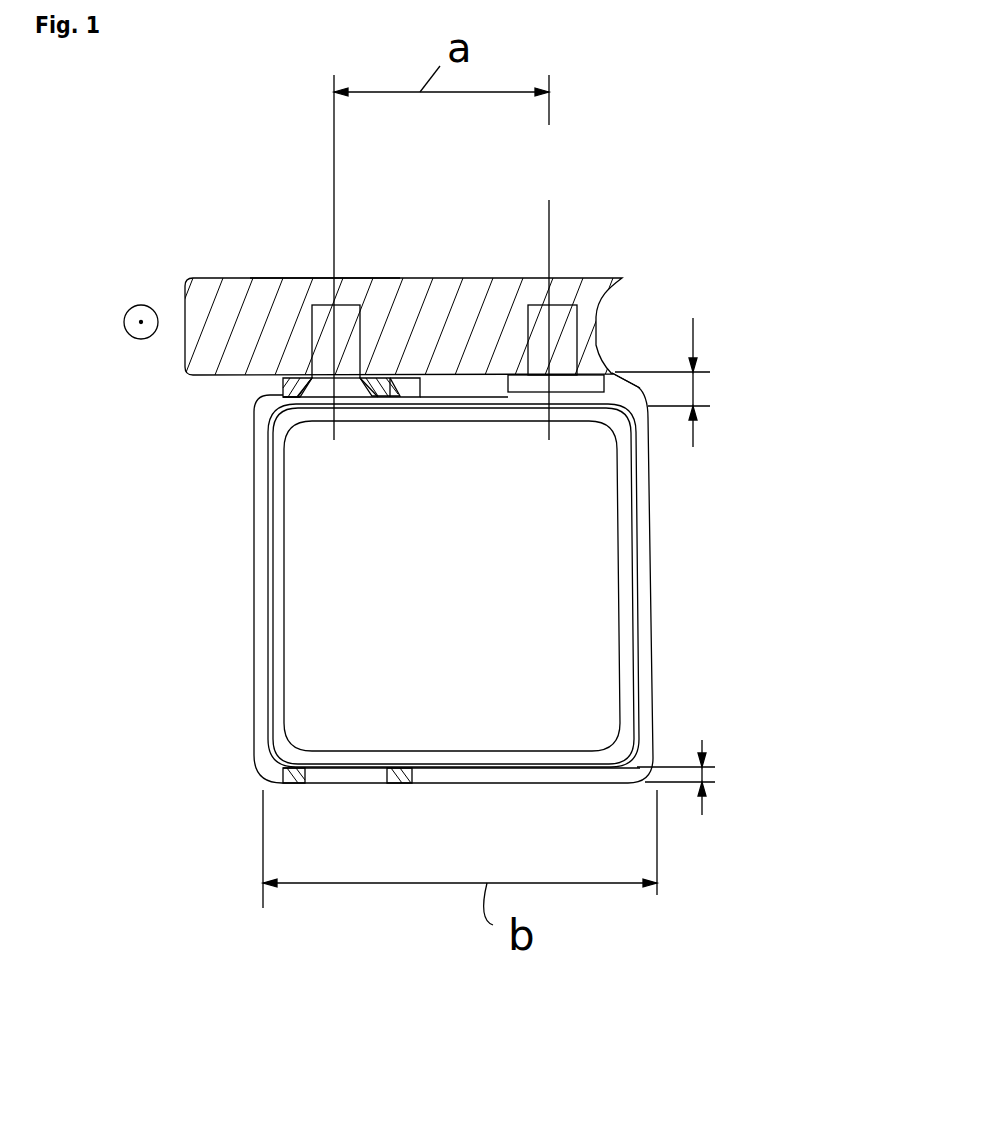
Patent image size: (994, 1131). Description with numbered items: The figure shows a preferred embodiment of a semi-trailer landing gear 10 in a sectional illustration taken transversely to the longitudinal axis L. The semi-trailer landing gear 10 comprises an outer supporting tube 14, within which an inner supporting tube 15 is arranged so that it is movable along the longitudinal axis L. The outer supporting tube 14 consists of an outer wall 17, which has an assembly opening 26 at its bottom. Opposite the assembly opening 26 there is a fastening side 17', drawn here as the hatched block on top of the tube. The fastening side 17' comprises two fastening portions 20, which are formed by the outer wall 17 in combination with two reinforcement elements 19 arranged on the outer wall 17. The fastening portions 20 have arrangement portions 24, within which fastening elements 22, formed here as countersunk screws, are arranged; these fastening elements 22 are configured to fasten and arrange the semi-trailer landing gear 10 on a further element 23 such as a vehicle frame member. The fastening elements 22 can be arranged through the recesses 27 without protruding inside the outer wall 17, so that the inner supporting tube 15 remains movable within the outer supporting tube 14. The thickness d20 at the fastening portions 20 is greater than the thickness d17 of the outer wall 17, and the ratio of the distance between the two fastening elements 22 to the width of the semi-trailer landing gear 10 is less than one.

The semi-trailer landing gear 10 is at (200, 757).
The outer supporting tube 14 is at (643, 633).
The inner supporting tube 15 is at (622, 502).
The outer wall 17 is at (489, 585).
The fastening side 17' is at (399, 257).
The reinforcement element 19 is at (507, 378).
The fastening portion 20 is at (289, 366).
The fastening element 22 is at (337, 313).
The further element 23 is at (306, 277).
The arrangement portion 24 is at (310, 413).
The assembly opening 26 is at (372, 797).
The recess 27 is at (420, 318).
The longitudinal axis L is at (146, 317).
The thickness of the fastening portion d20 is at (697, 436).
The thickness of the outer wall d17 is at (705, 745).